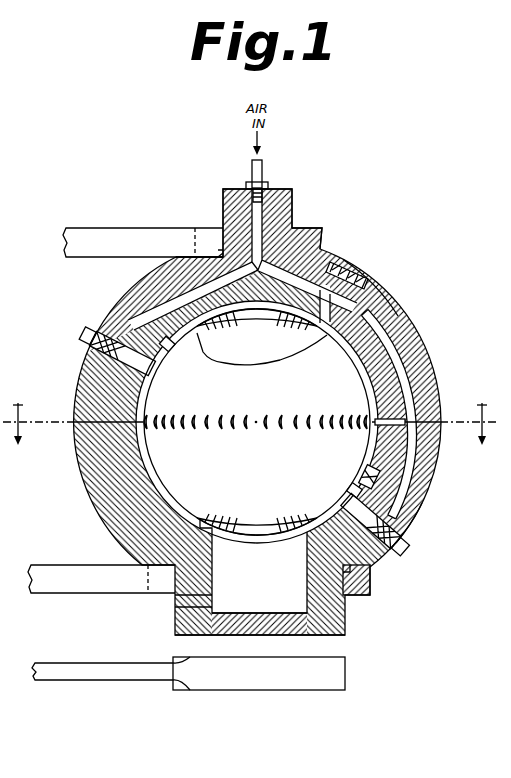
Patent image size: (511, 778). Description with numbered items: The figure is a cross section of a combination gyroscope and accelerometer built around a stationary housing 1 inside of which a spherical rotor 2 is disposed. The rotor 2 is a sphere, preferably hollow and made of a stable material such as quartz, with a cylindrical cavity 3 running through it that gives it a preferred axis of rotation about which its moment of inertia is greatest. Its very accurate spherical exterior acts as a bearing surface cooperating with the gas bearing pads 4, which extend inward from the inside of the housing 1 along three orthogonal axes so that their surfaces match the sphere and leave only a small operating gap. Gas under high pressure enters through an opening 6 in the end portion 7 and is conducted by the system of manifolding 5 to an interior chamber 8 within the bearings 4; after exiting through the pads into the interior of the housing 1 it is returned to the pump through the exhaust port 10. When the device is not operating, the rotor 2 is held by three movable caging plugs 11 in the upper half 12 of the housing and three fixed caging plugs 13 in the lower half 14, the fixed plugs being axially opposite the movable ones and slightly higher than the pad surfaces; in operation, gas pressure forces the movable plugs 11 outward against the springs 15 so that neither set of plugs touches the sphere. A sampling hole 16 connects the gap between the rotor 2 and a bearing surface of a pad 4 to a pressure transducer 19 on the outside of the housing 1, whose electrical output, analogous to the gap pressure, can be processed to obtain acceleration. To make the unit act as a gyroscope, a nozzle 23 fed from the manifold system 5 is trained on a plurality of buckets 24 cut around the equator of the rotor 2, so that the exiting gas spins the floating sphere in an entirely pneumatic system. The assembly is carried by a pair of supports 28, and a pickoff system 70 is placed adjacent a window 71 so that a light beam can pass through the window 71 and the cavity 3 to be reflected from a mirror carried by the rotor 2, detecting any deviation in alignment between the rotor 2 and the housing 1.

The housing 1 is at (421, 322).
The spherical rotor 2 is at (382, 366).
The cylindrical cavity 3 is at (255, 318).
The gas bearing pads 4 is at (168, 343).
The manifolding 5 is at (312, 262).
The opening 6 is at (262, 172).
The end portion 7 is at (292, 216).
The interior chamber 8 is at (371, 474).
The exhaust port 10 is at (175, 600).
The movable caging plugs 11 is at (322, 330).
The upper half of the housing 12 is at (395, 303).
The fixed caging plugs 13 is at (204, 518).
The lower half of the housing 14 is at (418, 505).
The springs 15 is at (362, 280).
The sampling hole 16 is at (372, 557).
The pressure transducer 19 is at (86, 335).
The nozzle 23 is at (382, 407).
The buckets 24 is at (323, 428).
The supports 28 is at (121, 234).
The pickoff system 70 is at (330, 692).
The window 71 is at (300, 636).